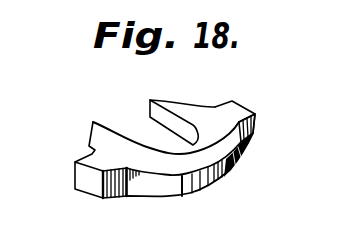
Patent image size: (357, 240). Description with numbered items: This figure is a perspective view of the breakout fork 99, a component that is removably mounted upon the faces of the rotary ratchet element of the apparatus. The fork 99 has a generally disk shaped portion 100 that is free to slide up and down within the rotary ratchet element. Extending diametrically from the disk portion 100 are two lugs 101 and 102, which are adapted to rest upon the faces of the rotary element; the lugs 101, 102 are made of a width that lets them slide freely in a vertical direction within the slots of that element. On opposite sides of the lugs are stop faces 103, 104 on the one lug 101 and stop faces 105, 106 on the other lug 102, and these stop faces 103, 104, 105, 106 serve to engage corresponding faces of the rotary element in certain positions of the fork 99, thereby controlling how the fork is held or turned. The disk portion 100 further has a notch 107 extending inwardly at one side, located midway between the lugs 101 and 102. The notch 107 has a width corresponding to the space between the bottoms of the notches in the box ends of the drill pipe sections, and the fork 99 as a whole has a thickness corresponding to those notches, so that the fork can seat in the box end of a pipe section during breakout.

The fork 99 is at (210, 181).
The disk shaped portion 100 is at (228, 144).
The lug 101 is at (78, 182).
The lug 102 is at (246, 111).
The stop face 103 is at (87, 157).
The stop face 104 is at (117, 193).
The stop face 105 is at (221, 101).
The stop face 106 is at (256, 127).
The notch 107 is at (124, 121).